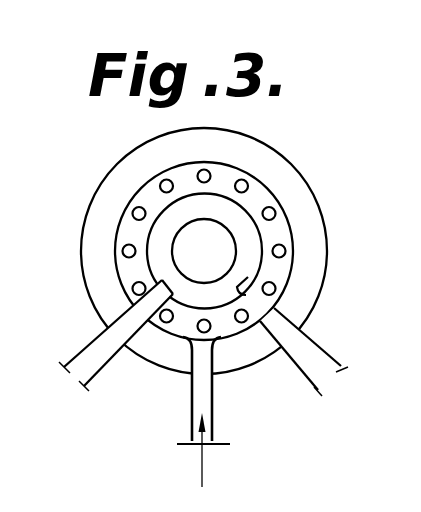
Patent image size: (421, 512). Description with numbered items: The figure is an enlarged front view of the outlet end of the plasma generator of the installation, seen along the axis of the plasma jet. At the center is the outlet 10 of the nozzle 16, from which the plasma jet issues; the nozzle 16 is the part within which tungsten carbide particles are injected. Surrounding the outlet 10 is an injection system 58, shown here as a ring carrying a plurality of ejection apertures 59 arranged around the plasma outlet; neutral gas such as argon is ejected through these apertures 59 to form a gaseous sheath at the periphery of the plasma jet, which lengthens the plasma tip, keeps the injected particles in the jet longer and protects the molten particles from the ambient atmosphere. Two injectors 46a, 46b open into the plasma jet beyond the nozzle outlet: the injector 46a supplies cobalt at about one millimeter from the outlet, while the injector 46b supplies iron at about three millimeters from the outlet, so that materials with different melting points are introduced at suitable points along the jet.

The outlet 10 is at (204, 264).
The nozzle 16 is at (263, 162).
The injection system 58 is at (292, 237).
The ejection apertures 59 is at (124, 248).
The injector 46a is at (99, 349).
The injector 46b is at (312, 357).